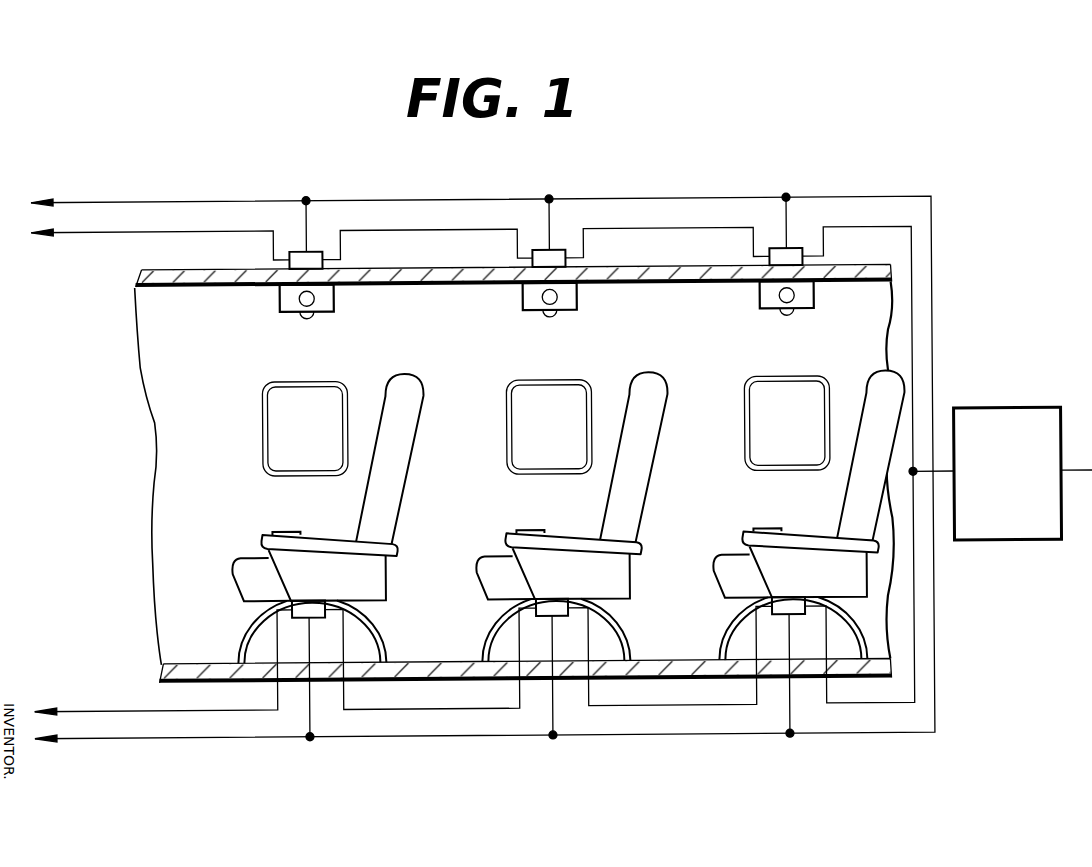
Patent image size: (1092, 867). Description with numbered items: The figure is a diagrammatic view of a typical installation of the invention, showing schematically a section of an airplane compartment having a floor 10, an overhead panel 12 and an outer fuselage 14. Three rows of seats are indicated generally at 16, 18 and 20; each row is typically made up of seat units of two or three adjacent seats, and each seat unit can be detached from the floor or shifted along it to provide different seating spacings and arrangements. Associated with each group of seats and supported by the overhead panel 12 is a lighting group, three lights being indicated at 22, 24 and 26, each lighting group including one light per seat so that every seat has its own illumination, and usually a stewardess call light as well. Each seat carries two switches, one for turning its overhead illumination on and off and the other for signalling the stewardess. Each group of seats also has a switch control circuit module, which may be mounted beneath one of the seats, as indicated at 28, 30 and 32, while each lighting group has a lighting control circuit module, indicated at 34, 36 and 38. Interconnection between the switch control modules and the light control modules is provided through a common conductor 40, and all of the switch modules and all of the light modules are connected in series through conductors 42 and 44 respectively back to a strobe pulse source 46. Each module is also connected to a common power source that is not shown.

The floor 10 is at (173, 662).
The overhead panel 12 is at (163, 267).
The outer fuselage 14 is at (182, 452).
The row of seats 16 is at (386, 382).
The row of seats 18 is at (624, 392).
The row of seats 20 is at (860, 384).
The light 22 is at (282, 303).
The light 24 is at (525, 304).
The light 26 is at (761, 301).
The switch control circuit module 28 is at (313, 610).
The switch control circuit module 30 is at (555, 610).
The switch control circuit module 32 is at (791, 610).
The lighting control circuit module 34 is at (325, 252).
The lighting control circuit module 36 is at (568, 251).
The lighting control circuit module 38 is at (805, 250).
The common conductor 40 is at (425, 736).
The conductor 42 is at (914, 668).
The conductor 44 is at (459, 229).
The strobe pulse source 46 is at (1018, 411).